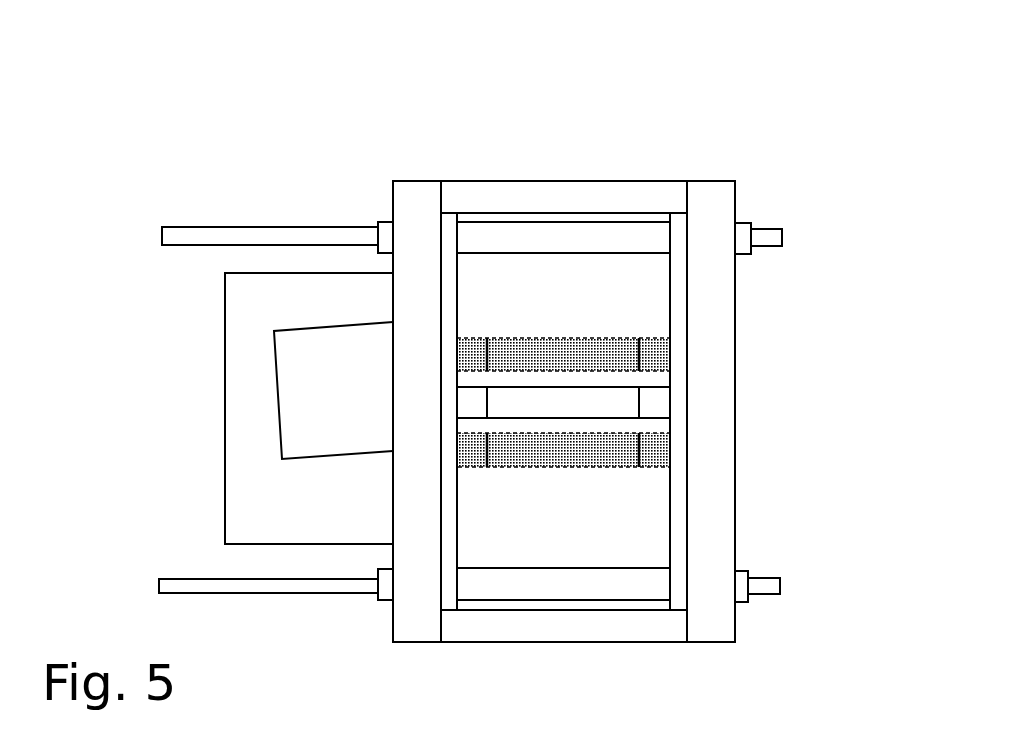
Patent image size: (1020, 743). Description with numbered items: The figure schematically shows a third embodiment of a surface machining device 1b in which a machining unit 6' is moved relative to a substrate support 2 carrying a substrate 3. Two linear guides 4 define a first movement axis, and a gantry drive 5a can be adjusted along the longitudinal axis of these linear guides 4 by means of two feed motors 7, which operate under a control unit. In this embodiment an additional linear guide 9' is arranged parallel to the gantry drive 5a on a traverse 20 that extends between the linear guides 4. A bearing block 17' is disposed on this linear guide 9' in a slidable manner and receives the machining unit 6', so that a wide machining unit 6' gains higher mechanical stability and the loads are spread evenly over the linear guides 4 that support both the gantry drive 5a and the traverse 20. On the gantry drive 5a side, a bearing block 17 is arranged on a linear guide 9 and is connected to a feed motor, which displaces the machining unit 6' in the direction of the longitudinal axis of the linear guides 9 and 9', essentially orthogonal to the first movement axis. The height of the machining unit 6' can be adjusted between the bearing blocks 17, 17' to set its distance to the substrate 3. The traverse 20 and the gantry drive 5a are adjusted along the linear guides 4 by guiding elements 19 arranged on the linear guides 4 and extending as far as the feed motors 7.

The surface machining device 1b is at (723, 136).
The substrate support 2 is at (237, 474).
The substrate 3 is at (295, 380).
The linear guides 4 is at (183, 237).
The gantry drive 5a is at (715, 325).
The machining unit 6' is at (644, 475).
The feed motors 7 is at (742, 238).
The linear guide 9 is at (647, 461).
The linear guide 9' is at (561, 146).
The bearing block 17 is at (638, 378).
The bearing block 17' is at (533, 549).
The guiding elements 19 is at (386, 236).
The traverse 20 is at (424, 195).